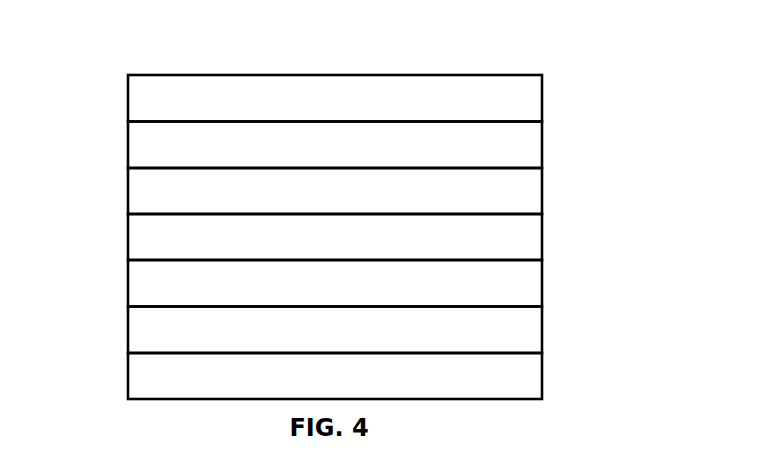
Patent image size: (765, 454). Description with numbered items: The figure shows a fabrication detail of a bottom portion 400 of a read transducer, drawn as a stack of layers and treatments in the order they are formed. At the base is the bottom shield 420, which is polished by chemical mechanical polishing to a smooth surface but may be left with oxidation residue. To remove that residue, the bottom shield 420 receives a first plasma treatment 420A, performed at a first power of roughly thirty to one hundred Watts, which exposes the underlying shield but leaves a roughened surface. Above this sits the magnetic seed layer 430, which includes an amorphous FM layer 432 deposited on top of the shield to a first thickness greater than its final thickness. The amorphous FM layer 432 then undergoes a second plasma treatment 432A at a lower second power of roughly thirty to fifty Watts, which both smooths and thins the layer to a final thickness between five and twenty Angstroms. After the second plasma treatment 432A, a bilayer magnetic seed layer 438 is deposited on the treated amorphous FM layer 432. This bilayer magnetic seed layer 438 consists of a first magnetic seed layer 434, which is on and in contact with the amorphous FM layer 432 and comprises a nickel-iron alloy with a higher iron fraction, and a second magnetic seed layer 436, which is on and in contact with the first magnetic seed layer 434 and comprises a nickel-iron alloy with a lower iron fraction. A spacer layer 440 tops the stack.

The bottom portion of a read transducer 400 is at (627, 48).
The spacer layer 440 is at (388, 98).
The bilayer magnetic seed layer 438 is at (115, 127).
The second magnetic seed layer 436 is at (542, 145).
The first magnetic seed layer 434 is at (542, 192).
The magnetic seed layer 430 is at (648, 125).
The second plasma treatment 432A is at (542, 238).
The amorphous FM layer 432 is at (542, 279).
The first plasma treatment 420A is at (542, 332).
The bottom shield 420 is at (542, 376).